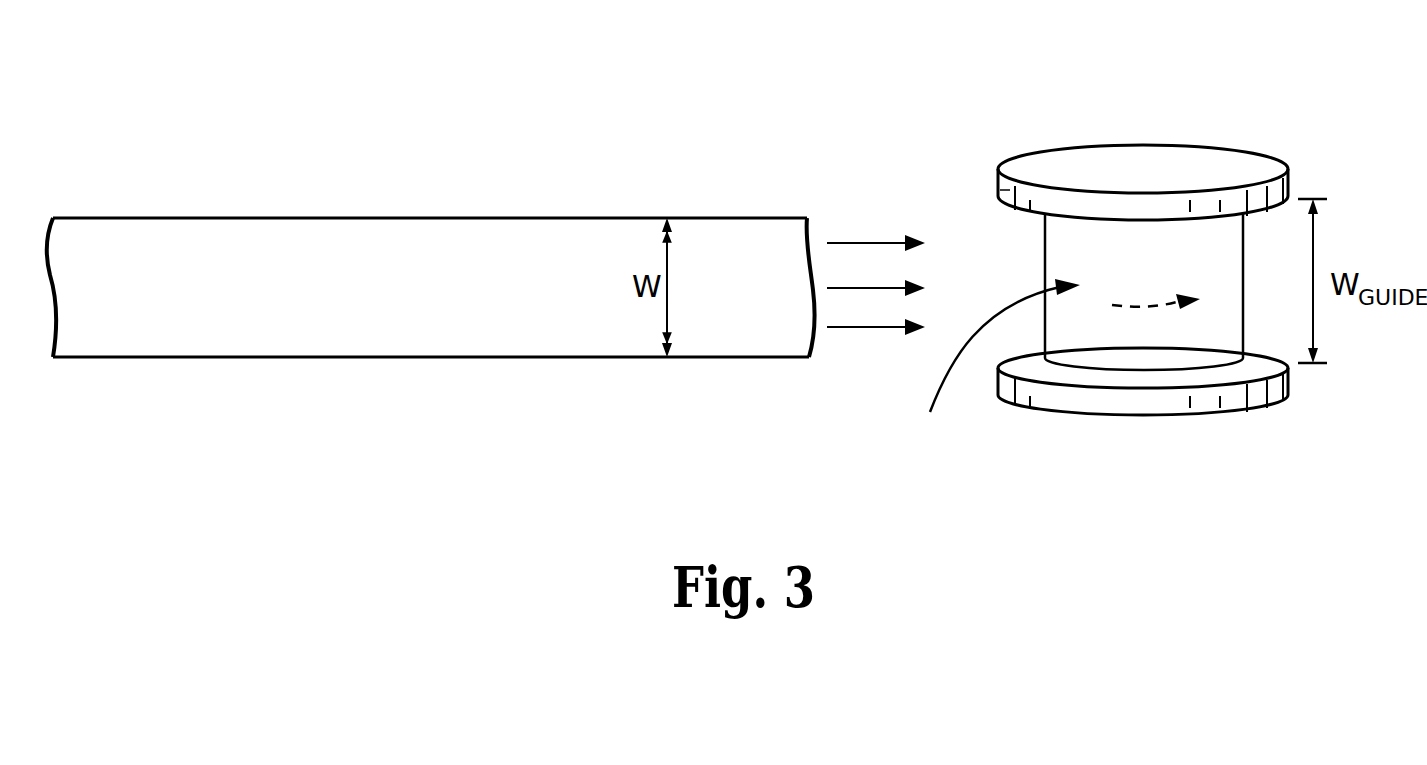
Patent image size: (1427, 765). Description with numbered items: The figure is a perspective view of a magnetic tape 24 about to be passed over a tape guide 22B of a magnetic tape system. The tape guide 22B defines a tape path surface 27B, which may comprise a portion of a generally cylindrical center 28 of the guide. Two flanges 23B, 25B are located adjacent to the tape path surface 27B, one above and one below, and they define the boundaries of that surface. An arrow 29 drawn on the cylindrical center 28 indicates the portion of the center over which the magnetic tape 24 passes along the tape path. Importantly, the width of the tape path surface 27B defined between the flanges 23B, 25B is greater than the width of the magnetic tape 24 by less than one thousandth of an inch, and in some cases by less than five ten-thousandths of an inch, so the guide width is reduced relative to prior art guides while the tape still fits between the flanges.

The tape guide 22B is at (1135, 157).
The flange 23B is at (1000, 190).
The magnetic tape 24 is at (558, 342).
The flange 25B is at (1013, 402).
The tape path surface 27B is at (986, 363).
The cylindrical center 28 is at (1057, 250).
The arrow 29 is at (1150, 308).